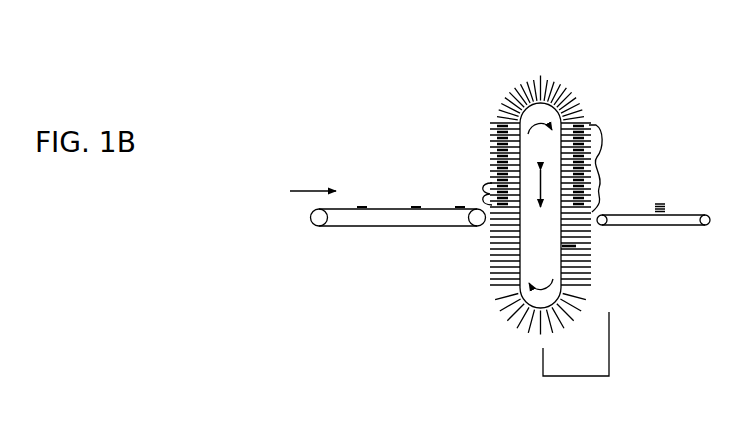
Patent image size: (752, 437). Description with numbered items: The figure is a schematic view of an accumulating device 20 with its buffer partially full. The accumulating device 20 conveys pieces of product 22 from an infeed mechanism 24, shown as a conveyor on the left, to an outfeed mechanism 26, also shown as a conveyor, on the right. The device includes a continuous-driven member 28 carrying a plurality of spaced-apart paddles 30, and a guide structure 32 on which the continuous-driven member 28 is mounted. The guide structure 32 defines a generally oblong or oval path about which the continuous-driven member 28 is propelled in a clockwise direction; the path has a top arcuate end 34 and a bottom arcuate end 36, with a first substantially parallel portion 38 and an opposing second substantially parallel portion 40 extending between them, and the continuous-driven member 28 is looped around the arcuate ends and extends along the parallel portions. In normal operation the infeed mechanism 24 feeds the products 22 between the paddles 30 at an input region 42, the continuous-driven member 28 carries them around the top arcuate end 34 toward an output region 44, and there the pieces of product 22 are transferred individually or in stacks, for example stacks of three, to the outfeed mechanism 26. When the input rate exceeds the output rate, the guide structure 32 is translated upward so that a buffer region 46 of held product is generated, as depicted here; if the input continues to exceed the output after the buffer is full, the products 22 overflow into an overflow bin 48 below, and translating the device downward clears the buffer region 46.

The accumulating device 20 is at (604, 99).
The pieces of product 22 is at (416, 205).
The infeed mechanism 24 is at (373, 226).
The outfeed mechanism 26 is at (673, 226).
The continuous-driven member 28 is at (561, 274).
The paddles 30 is at (531, 82).
The guide structure 32 is at (551, 257).
The top arcuate end 34 is at (550, 65).
The bottom arcuate end 36 is at (516, 348).
The first substantially parallel portion 38 is at (520, 254).
The second substantially parallel portion 40 is at (583, 246).
The input region 42 is at (488, 189).
The output region 44 is at (593, 206).
The buffer region 46 is at (600, 159).
The overflow bin 48 is at (609, 340).